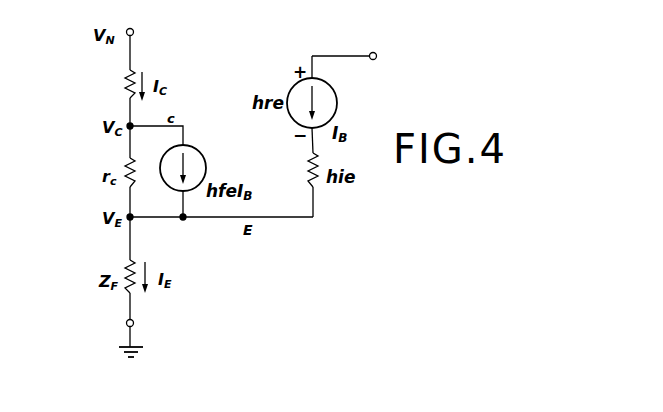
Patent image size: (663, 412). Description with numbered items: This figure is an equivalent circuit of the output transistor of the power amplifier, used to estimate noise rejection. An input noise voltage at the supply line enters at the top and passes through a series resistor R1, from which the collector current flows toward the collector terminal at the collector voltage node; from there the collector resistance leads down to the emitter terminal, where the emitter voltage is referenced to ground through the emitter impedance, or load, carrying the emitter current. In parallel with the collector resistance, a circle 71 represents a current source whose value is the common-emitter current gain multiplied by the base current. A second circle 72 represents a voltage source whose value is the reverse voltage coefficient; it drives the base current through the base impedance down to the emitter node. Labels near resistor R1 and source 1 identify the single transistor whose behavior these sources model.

The current source 71 is at (198, 151).
The voltage source 72 is at (335, 111).
The resistor R1 is at (114, 84).
The resistor R1 1 is at (130, 84).